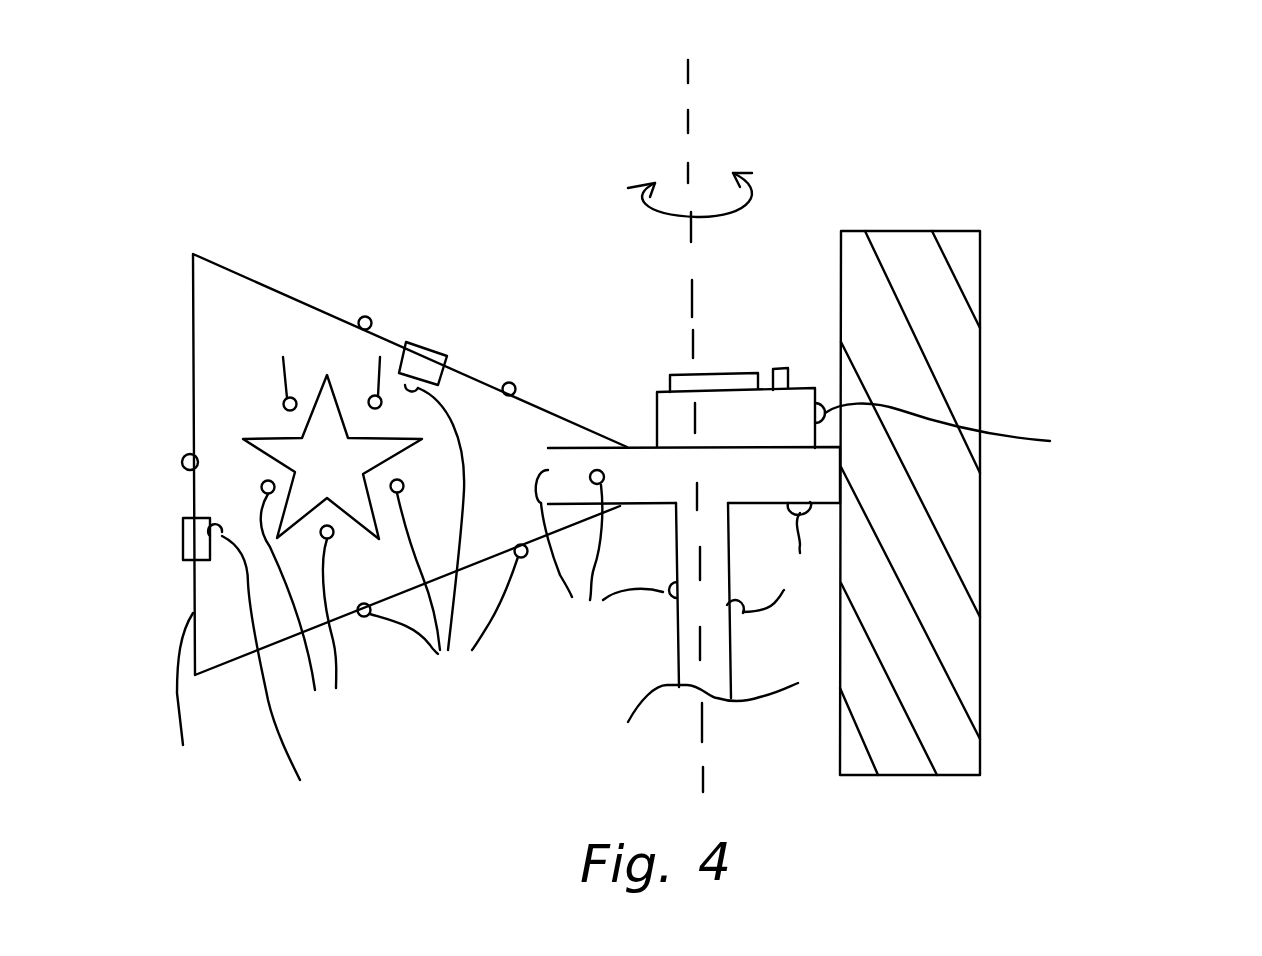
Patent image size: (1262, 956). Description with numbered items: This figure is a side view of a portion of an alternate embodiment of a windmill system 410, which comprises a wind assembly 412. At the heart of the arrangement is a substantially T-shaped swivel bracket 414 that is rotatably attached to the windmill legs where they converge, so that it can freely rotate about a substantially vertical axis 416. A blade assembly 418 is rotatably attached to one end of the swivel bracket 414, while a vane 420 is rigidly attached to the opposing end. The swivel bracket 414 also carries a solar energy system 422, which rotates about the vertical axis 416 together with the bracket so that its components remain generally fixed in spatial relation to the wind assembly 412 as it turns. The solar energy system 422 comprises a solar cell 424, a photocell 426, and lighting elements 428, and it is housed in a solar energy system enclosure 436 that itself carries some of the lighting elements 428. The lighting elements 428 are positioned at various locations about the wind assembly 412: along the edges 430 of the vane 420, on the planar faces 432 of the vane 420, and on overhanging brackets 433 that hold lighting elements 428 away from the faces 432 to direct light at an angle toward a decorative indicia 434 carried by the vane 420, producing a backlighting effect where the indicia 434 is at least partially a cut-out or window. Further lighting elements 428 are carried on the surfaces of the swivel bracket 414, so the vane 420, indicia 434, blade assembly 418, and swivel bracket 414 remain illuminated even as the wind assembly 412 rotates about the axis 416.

The windmill system 410 is at (1157, 123).
The wind assembly 412 is at (835, 177).
The swivel bracket 414 is at (647, 417).
The vertical axis 416 is at (690, 132).
The blade assembly 418 is at (942, 208).
The vane 420 is at (299, 269).
The solar energy system 422 is at (765, 322).
The solar cell 424 is at (683, 372).
The photocell 426 is at (780, 369).
The lighting elements 428 is at (283, 357).
The edges of vane 430 is at (240, 273).
The faces of vane 432 is at (532, 468).
The overhanging brackets 433 is at (422, 350).
The decorative indicia 434 is at (282, 438).
The solar energy system enclosure 436 is at (777, 428).